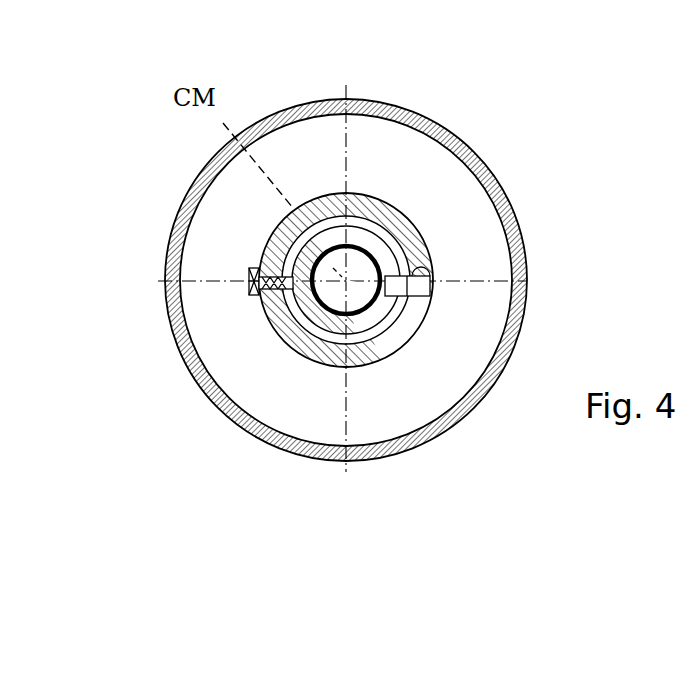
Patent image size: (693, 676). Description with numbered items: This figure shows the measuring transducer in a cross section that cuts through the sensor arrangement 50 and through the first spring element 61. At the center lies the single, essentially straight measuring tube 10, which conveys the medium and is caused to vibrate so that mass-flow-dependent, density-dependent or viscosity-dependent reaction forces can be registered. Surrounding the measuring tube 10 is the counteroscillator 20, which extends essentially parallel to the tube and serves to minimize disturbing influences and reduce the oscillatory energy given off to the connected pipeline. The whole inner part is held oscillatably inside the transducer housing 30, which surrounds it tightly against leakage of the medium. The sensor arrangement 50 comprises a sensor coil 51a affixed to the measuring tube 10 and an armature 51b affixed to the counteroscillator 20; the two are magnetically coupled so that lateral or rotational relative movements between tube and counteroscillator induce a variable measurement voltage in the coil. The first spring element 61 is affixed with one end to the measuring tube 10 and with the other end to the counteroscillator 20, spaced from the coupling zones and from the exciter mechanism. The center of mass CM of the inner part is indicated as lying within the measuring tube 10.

The measuring tube 10 is at (370, 303).
The counteroscillator 20 is at (273, 242).
The transducer housing 30 is at (392, 105).
The sensor arrangement 50 is at (503, 137).
The sensor coil 51a is at (442, 230).
The armature 51b is at (432, 270).
The first spring element 61 is at (245, 293).